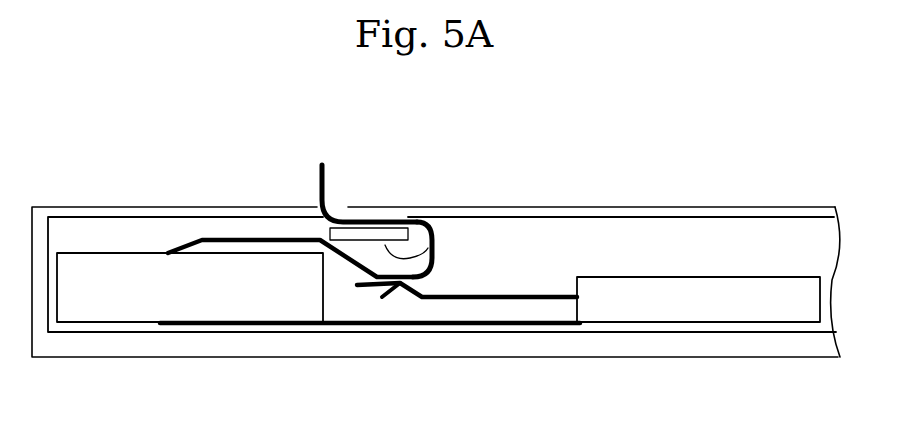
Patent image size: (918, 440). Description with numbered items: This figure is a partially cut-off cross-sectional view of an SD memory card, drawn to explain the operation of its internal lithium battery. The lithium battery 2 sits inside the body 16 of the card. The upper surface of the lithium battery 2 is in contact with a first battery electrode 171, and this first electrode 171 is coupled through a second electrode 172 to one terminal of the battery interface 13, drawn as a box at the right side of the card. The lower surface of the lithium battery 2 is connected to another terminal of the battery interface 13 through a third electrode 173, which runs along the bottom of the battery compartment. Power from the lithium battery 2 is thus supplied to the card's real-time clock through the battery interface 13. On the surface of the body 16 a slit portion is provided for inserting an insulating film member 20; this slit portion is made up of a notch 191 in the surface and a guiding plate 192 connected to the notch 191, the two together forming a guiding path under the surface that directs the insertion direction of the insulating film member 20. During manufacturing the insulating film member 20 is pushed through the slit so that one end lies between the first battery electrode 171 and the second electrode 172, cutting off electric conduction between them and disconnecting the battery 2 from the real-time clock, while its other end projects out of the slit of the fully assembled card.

The lithium battery 2 is at (127, 322).
The battery interface 13 is at (647, 277).
The body 16 is at (531, 207).
The insulating film member 20 is at (315, 182).
The first battery electrode 171 is at (188, 247).
The second electrode 172 is at (522, 295).
The third electrode 173 is at (425, 323).
The notch 191 is at (339, 205).
The guiding plate 192 is at (438, 250).